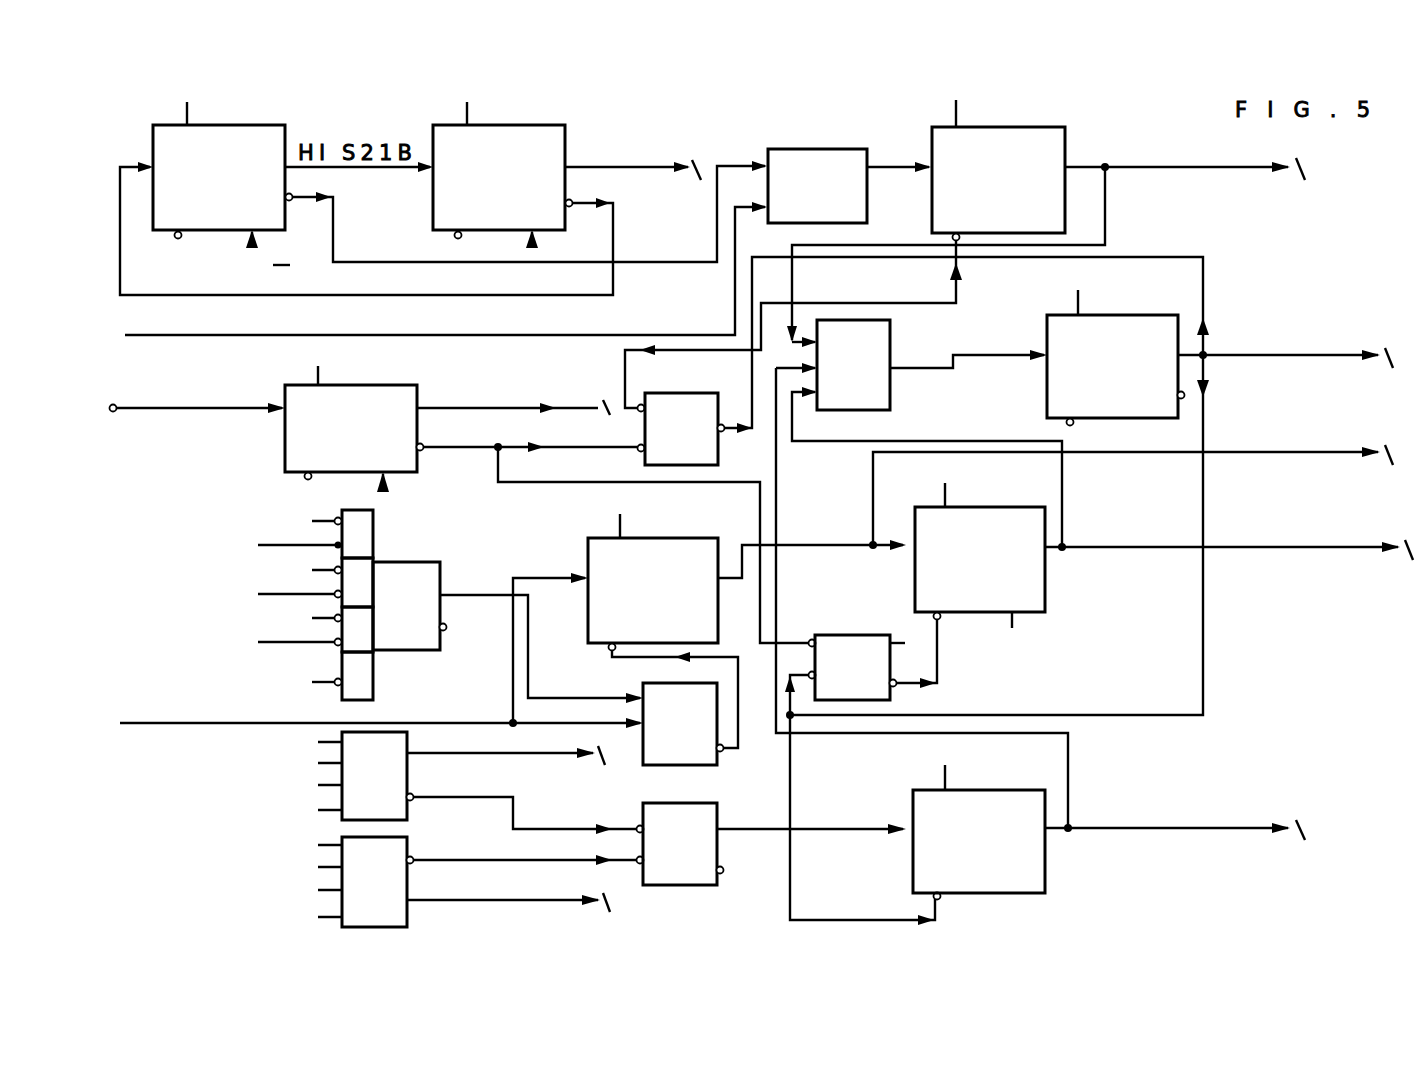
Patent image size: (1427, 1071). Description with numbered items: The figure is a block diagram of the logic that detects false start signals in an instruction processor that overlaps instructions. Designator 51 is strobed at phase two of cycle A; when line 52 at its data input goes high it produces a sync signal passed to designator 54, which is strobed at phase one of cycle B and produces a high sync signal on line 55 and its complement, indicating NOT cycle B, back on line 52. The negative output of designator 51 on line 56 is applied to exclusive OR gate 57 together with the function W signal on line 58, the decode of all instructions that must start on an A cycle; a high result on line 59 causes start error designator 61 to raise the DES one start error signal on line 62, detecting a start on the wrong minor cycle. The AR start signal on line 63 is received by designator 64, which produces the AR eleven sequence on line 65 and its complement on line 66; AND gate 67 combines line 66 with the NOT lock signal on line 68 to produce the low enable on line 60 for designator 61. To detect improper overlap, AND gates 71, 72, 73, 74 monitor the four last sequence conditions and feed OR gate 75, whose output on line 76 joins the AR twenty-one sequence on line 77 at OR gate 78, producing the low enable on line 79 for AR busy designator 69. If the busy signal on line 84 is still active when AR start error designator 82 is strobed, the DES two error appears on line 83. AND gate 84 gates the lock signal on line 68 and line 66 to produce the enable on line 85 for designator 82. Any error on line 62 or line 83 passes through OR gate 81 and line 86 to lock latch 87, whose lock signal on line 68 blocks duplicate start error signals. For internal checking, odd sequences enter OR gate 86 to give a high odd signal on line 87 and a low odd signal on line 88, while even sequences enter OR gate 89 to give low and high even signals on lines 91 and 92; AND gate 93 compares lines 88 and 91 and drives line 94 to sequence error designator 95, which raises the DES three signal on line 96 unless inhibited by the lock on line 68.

The designator 51 is at (243, 123).
The line 52 is at (142, 163).
The designator 54 is at (527, 123).
The line 55 is at (633, 168).
The line 56 is at (752, 160).
The exclusive OR gate 57 is at (834, 148).
The line 58 is at (732, 283).
The line 59 is at (910, 166).
The line 60 is at (957, 288).
The start error designator 61 is at (1050, 125).
The line 62 is at (1230, 168).
The line 63 is at (178, 409).
The designator 64 is at (285, 440).
The line 65 is at (422, 400).
The line 66 is at (443, 452).
The AND gate 67 is at (690, 393).
The line 68 is at (883, 257).
The AR busy designator 69 is at (675, 538).
The AND gate 71 is at (377, 522).
The AND gate 72 is at (377, 587).
The AND gate 73 is at (375, 633).
The AND gate 74 is at (377, 680).
The OR gate 75 is at (445, 572).
The line 76 is at (487, 596).
The line 77 is at (467, 722).
The OR gate 78 is at (697, 767).
The line 79 is at (626, 658).
The OR gate 81 is at (893, 343).
The AR start error designator 82 is at (1048, 575).
The line 83 is at (837, 442).
The AND gate 84 is at (823, 543).
The line 85 is at (938, 638).
The OR gate 86 is at (997, 360).
The lock latch 87 is at (1120, 313).
The line 88 is at (587, 858).
The OR gate 89 is at (410, 803).
The line 91 is at (573, 827).
The line 92 is at (515, 757).
The AND gate 93 is at (673, 887).
The line 94 is at (850, 828).
The sequence error designator 95 is at (1045, 870).
The line 96 is at (1230, 832).